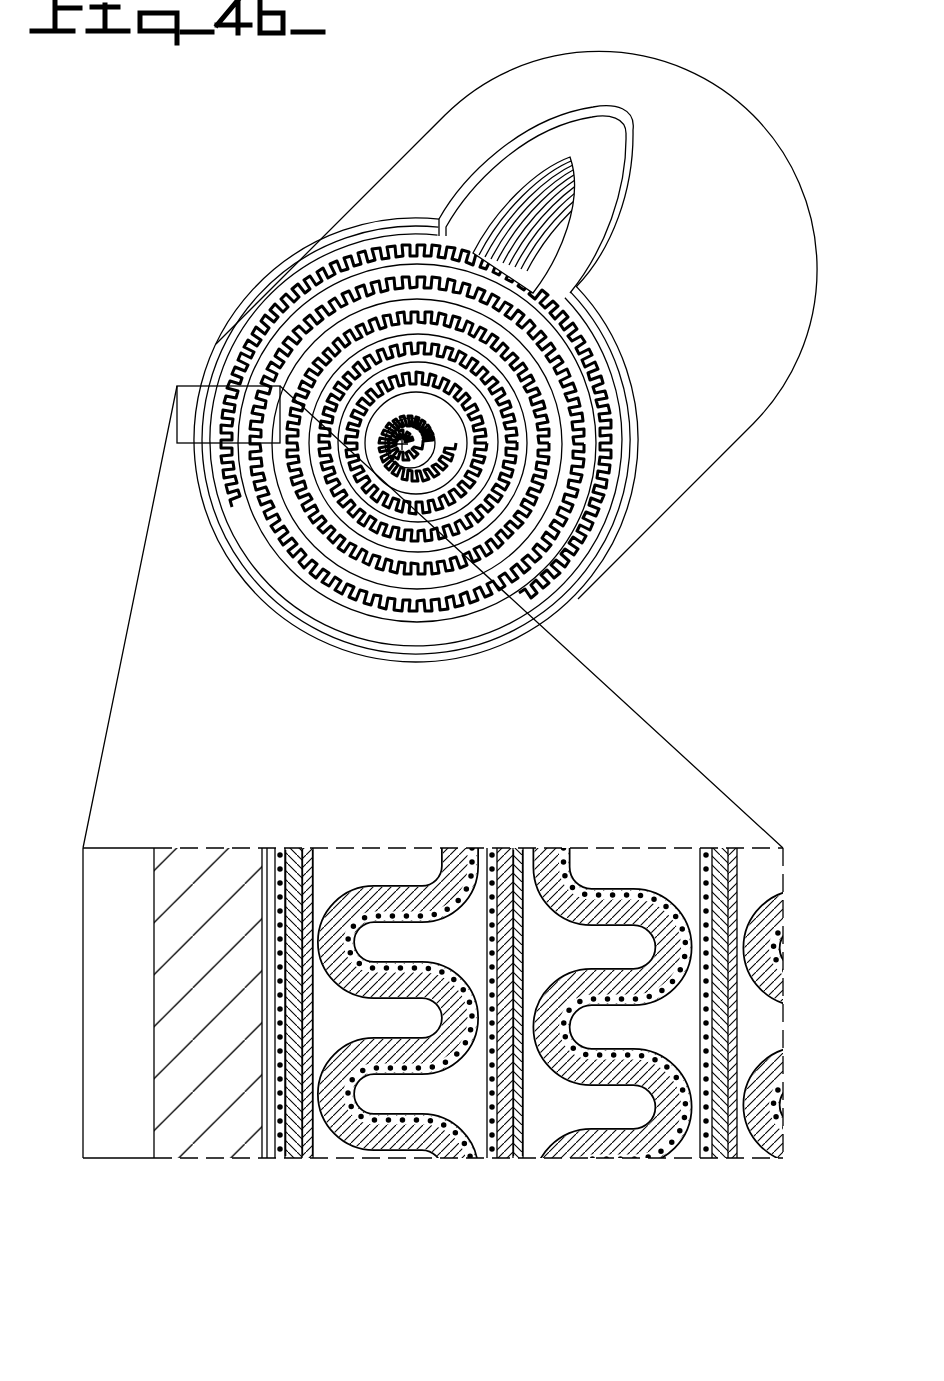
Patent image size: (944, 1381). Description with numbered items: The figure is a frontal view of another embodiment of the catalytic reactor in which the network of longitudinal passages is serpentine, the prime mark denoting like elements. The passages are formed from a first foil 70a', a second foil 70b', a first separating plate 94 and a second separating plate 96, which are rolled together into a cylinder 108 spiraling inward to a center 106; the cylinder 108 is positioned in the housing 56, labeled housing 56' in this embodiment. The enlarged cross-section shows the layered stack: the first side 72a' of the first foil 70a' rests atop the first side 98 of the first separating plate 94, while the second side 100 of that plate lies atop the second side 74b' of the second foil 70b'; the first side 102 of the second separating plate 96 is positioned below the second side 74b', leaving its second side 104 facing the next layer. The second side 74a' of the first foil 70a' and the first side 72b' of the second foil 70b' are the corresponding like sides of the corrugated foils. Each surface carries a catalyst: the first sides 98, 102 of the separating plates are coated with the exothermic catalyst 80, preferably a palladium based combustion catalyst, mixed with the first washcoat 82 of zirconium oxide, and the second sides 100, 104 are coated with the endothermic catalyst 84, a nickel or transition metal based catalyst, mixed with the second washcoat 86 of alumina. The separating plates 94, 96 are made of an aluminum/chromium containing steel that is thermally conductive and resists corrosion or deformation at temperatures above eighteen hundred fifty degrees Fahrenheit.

The housing 56' is at (505, 356).
The cylinder 108 is at (322, 202).
The center 106 is at (400, 447).
The first foil 70a' is at (481, 723).
The second foil 70b' is at (511, 716).
The first separating plate 94 is at (575, 582).
The second separating plate 96 is at (538, 587).
The first side of the first foil 72a' is at (400, 980).
The second side of the first foil 74a' is at (411, 959).
The first side of the second foil 72b' is at (610, 953).
The second side of the second foil 74b' is at (625, 995).
The housing 56 is at (146, 1003).
The endothermic catalyst 84 is at (265, 1150).
The second washcoat 86 is at (280, 1150).
The second side of the first separating plate 100 is at (288, 1150).
The first side of the first separating plate 98 is at (312, 1150).
The exothermic catalyst 80 is at (305, 1150).
The first washcoat 82 is at (309, 1150).
The second side of the second separating plate 104 is at (505, 1150).
The first side of the second separating plate 102 is at (523, 1150).